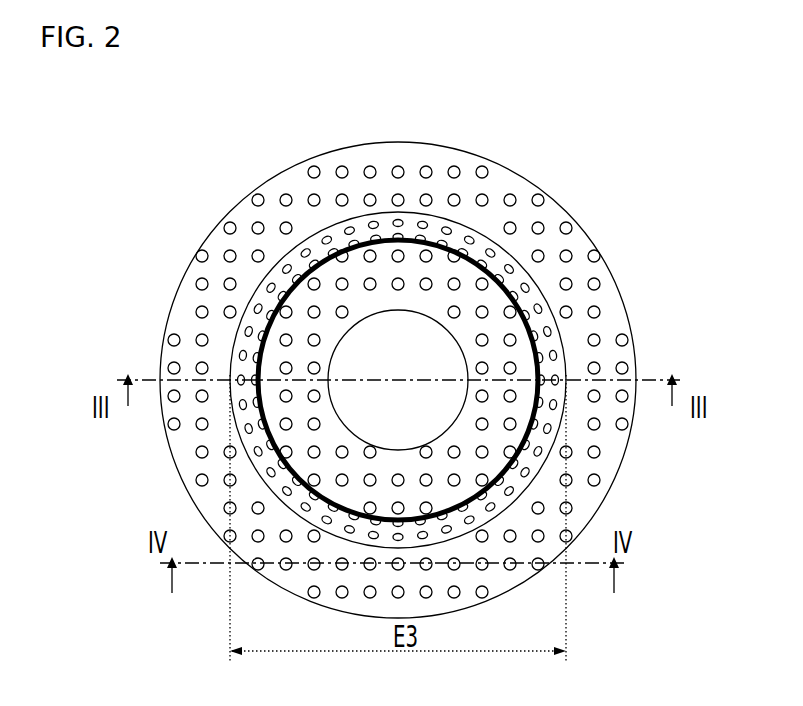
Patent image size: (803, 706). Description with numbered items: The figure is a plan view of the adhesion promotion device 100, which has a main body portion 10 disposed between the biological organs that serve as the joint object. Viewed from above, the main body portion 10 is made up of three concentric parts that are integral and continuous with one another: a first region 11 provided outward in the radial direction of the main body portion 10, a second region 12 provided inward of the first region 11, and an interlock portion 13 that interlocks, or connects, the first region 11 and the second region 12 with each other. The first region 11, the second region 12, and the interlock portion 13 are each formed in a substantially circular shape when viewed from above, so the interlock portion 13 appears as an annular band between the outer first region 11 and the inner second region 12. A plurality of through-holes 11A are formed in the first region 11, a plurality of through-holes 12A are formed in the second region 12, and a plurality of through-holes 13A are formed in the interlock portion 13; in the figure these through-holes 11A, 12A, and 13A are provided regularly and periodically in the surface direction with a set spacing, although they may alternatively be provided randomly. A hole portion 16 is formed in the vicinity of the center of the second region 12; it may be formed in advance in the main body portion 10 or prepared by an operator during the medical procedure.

The adhesion promotion device 100 is at (83, 170).
The main body portion 10 is at (160, 454).
The first region 11 is at (398, 348).
The through-holes 11A is at (540, 202).
The second region 12 is at (472, 380).
The through-holes 12A is at (493, 455).
The interlock portion 13 is at (353, 348).
The through-holes 13A is at (258, 310).
The hole portion 16 is at (361, 322).